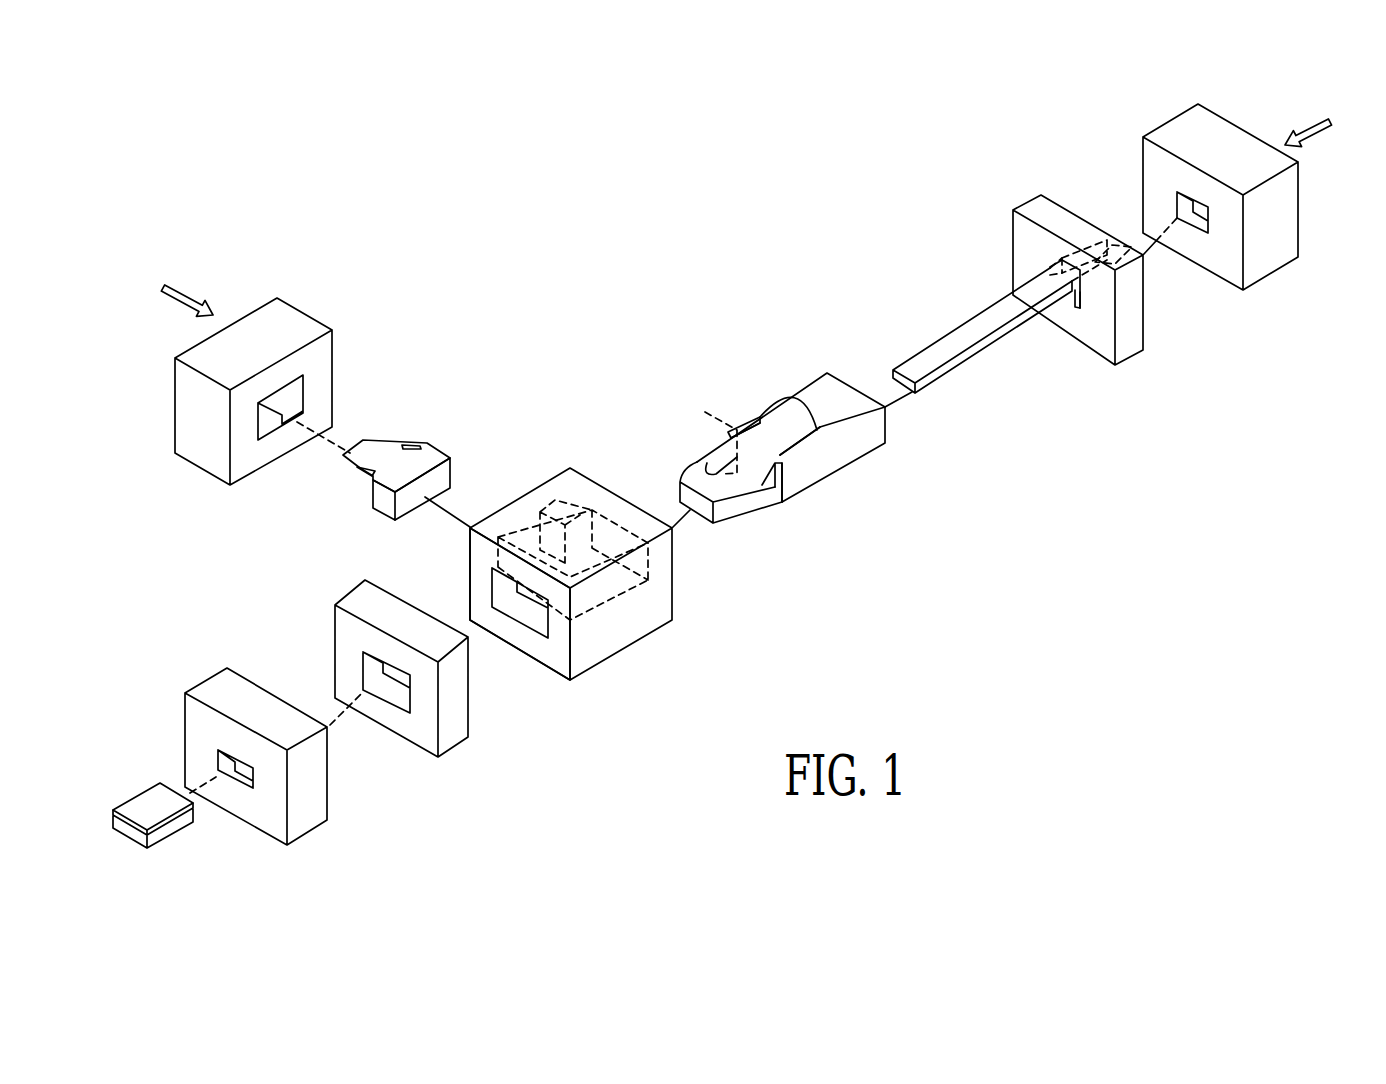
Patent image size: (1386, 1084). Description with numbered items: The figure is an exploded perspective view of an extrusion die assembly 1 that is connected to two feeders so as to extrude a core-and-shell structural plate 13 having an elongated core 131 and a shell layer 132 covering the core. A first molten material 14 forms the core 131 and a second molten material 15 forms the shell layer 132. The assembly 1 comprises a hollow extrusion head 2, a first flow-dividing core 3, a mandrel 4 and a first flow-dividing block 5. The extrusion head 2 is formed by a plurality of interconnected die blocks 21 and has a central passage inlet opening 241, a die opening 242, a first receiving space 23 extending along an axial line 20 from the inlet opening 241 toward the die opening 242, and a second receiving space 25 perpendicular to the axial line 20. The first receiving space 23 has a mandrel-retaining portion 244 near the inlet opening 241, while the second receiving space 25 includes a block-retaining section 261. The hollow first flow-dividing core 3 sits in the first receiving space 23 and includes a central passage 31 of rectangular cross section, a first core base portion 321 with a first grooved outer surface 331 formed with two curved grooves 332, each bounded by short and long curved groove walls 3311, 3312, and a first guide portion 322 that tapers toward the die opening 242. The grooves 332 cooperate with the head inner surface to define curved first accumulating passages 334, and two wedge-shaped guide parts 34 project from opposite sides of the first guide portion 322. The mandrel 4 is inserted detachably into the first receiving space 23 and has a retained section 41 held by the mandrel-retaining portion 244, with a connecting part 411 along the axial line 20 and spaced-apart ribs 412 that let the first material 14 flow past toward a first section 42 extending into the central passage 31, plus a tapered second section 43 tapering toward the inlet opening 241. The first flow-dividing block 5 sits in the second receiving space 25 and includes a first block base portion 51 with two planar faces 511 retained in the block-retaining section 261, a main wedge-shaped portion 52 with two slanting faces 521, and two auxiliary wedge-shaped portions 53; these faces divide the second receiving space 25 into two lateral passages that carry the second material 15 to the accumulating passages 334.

The extrusion die assembly 1 is at (654, 306).
The core-and-shell structural plate 13 is at (160, 818).
The elongated core 131 is at (130, 829).
The shell layer 132 is at (140, 798).
The first molten material 14 is at (1256, 214).
The second molten material 15 is at (185, 287).
The hollow extrusion head 2 is at (668, 561).
The axial line 20 is at (338, 708).
The die blocks 21 is at (765, 486).
The first receiving space 23 is at (532, 615).
The central passage inlet opening 241 is at (1203, 222).
The die opening 242 is at (242, 782).
The mandrel-retaining portion 244 is at (1087, 305).
The second receiving space 25 is at (522, 533).
The block-retaining section 261 is at (555, 530).
The first flow-dividing core 3 is at (805, 463).
The central passage 31 is at (698, 501).
The first core base portion 321 is at (843, 460).
The first guide portion 322 is at (699, 447).
The first grooved outer surface 331 is at (848, 403).
The grooves 332 is at (793, 407).
The first accumulating passages 334 is at (770, 433).
The short curved groove wall 3311 is at (758, 432).
The long curved groove wall 3312 is at (845, 436).
The wedge-shaped guide parts 34 is at (723, 457).
The mandrel 4 is at (1012, 298).
The retained section 41 is at (1066, 255).
The connecting part 411 is at (1067, 277).
The ribs 412 is at (1100, 262).
The first section 42 is at (937, 360).
The tapered second section 43 is at (1106, 302).
The first flow-dividing block 5 is at (385, 452).
The first block base portion 51 is at (380, 511).
The planar faces 511 is at (430, 462).
The main wedge-shaped portion 52 is at (413, 442).
The slanting faces 521 is at (380, 450).
The auxiliary wedge-shaped portions 53 is at (401, 439).